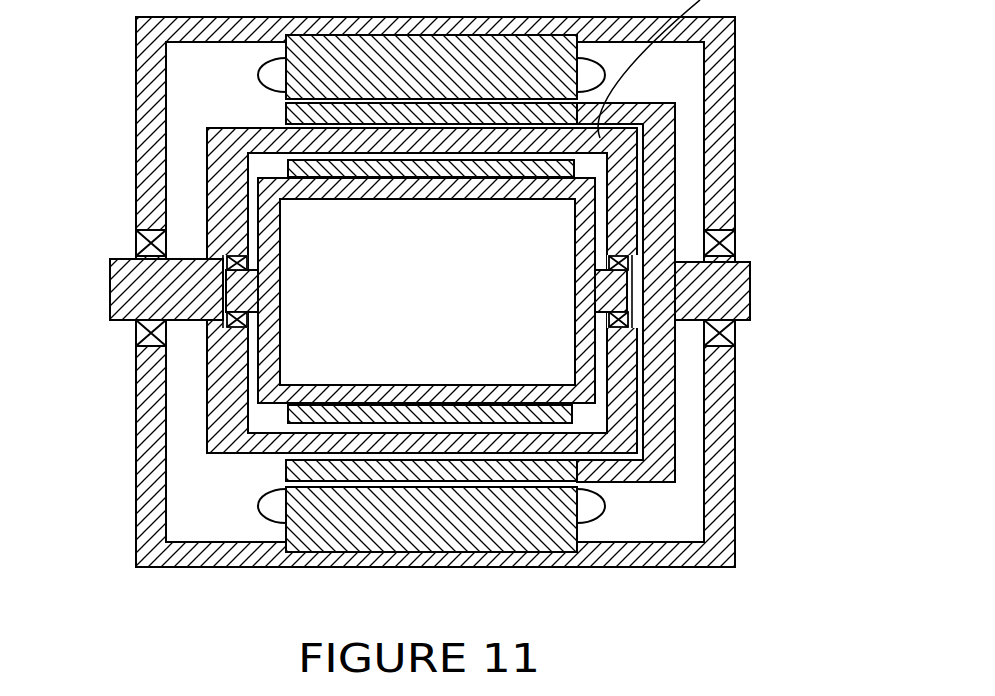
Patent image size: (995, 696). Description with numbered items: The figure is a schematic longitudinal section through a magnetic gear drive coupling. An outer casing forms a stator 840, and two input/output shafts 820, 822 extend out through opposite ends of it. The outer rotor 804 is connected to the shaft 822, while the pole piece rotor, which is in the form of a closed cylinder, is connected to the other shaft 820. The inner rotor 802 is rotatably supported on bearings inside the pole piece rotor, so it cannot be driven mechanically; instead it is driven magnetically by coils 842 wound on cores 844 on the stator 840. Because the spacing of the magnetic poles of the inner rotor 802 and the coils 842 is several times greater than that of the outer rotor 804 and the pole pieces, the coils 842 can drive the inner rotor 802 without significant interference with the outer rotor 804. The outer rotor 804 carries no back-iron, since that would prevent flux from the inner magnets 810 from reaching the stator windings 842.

The inner rotor 802 is at (305, 398).
The outer rotor 804 is at (665, 138).
The inner magnets 810 is at (528, 417).
The input/output shaft 820 is at (123, 272).
The input/output shaft 822 is at (730, 280).
The stator 840 is at (620, 555).
The coils 842 is at (280, 517).
The cores 844 is at (492, 540).